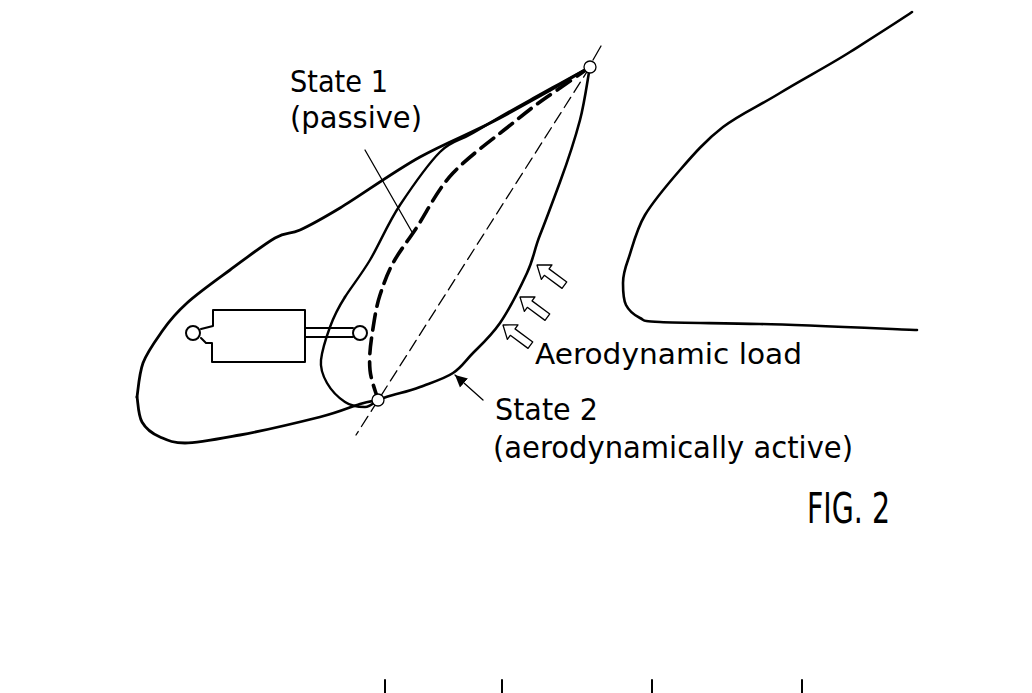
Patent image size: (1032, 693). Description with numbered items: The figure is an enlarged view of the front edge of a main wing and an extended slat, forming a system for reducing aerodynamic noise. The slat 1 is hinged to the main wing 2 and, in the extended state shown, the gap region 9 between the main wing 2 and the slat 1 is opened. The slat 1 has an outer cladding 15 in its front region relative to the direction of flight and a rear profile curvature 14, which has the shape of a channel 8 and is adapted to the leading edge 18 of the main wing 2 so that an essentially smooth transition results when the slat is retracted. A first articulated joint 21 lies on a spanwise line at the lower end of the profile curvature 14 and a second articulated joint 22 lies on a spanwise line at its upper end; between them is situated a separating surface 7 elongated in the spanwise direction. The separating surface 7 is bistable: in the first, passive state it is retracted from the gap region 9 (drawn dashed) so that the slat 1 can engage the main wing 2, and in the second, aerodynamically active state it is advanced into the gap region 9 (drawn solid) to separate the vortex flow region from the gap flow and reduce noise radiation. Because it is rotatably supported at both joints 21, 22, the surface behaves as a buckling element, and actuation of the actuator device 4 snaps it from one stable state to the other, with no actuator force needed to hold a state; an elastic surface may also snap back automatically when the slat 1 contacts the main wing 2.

The slat 1 is at (130, 385).
The main wing 2 is at (808, 327).
The actuator device 4 is at (213, 310).
The separating surface 7 is at (560, 182).
The channel 8 is at (349, 287).
The gap region 9 is at (632, 172).
The rear profile curvature 14 is at (339, 379).
The outer cladding 15 is at (277, 236).
The leading edge 18 is at (720, 261).
The first articulated joint 21 is at (394, 422).
The second articulated joint 22 is at (604, 61).